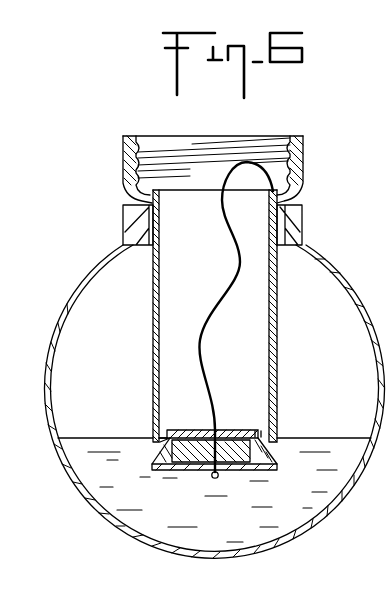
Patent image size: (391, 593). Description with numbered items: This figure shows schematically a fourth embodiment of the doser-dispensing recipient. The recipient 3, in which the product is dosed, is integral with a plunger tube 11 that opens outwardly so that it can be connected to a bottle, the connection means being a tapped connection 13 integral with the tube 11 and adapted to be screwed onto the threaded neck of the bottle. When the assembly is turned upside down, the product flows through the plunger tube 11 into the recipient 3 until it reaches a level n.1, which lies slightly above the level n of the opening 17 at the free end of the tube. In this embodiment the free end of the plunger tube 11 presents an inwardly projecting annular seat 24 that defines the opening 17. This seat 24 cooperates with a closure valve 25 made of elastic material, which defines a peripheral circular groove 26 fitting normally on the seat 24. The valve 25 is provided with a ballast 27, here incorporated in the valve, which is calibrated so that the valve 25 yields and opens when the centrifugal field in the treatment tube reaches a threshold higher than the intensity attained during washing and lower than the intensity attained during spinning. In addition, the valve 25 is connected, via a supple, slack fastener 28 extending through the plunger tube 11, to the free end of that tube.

The recipient 3 is at (355, 280).
The tapped connection 13 is at (125, 163).
The plunger tube 11 is at (280, 338).
The supple, slack fastener 28 is at (222, 302).
The inwardly projecting annular seat 24 is at (160, 445).
The closure valve 25 is at (217, 433).
The peripheral circular groove 26 is at (177, 443).
The ballast 27 is at (197, 465).
The opening 17 is at (252, 430).
The level n is at (237, 464).
The level n.1 is at (323, 438).